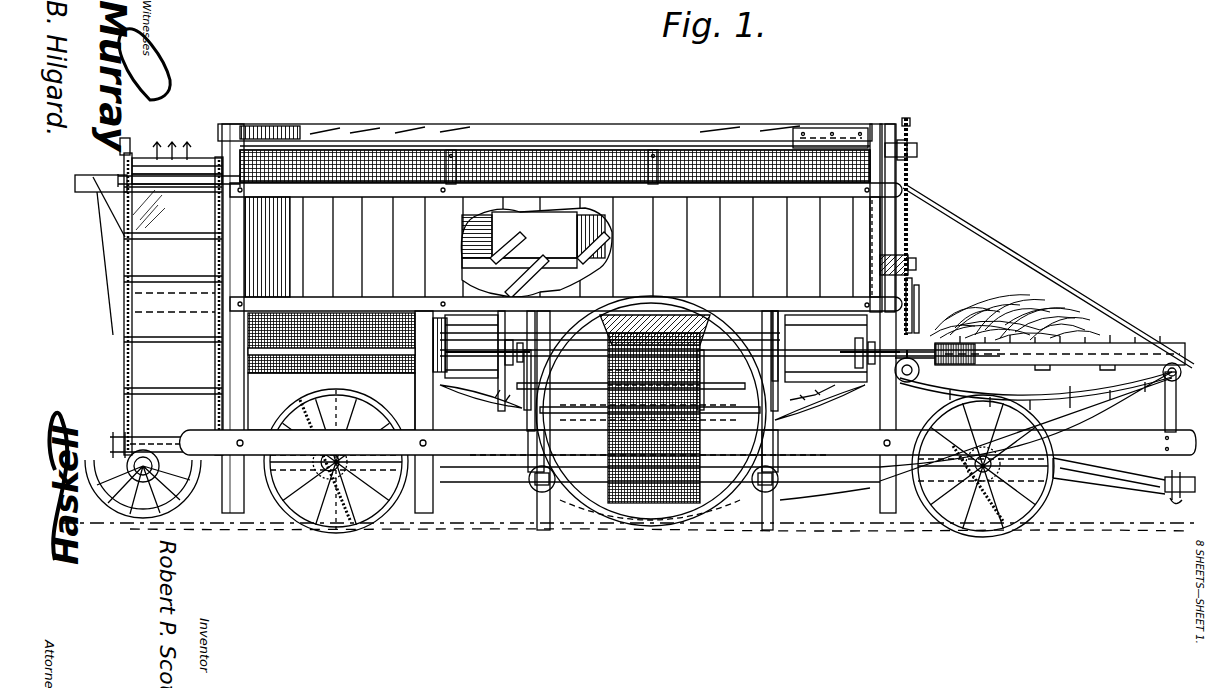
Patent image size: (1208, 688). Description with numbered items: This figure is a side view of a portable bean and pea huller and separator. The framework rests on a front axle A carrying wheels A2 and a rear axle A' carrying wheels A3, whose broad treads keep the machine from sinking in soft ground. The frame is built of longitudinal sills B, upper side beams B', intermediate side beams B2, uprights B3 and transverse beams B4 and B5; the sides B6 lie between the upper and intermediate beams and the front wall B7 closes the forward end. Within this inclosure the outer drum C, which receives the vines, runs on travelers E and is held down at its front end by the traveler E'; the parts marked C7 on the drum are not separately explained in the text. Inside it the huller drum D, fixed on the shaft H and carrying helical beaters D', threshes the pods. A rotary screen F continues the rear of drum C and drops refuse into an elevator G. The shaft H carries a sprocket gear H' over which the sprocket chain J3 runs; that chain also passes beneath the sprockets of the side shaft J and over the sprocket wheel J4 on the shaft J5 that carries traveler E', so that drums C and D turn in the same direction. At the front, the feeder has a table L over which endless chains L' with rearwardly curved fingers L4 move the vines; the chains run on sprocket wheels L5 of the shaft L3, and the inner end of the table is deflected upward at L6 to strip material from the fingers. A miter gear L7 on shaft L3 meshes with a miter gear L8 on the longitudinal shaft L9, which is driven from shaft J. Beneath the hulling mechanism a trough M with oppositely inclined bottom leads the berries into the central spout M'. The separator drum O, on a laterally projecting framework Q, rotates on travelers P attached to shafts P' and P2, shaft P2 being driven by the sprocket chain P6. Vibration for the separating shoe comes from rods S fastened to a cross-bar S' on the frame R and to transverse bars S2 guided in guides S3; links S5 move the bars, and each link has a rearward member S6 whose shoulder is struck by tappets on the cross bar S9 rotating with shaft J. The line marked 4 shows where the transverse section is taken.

The section line 4 is at (657, 604).
The transverse beams B4 is at (256, 134).
The rotary screen F is at (352, 156).
The outer drum C is at (574, 163).
The netting brackets C7 is at (455, 150).
The upper side beams B' is at (566, 201).
The sides B6 is at (713, 205).
The intermediate side beams B2 is at (350, 302).
The transverse beams B5 is at (372, 262).
The uprights B3 is at (567, 326).
The front wall B7 is at (876, 237).
The longitudinal sills B is at (331, 371).
The elevator G is at (157, 298).
The front axle A is at (551, 488).
The rear axle A' is at (336, 474).
The rear wheels A3 is at (349, 473).
The front wheels A2 is at (963, 531).
The separator framework Q is at (733, 303).
The spout M' is at (655, 437).
The frame R is at (640, 440).
The travelers E is at (720, 348).
The upper traveler E' is at (844, 205).
The cross bar S9 is at (505, 353).
The links S5 is at (519, 320).
The rearwardly extending member S6 is at (546, 320).
The cross-bar S' is at (638, 381).
The rods S is at (652, 407).
The guides S3 is at (522, 426).
The bars S2 is at (524, 456).
The travelers P is at (660, 495).
The shaft P' is at (530, 420).
The shaft P2 is at (776, 496).
The sprocket chain P6 is at (872, 490).
The separator drum O is at (606, 510).
The trough M is at (810, 407).
The shaft J is at (810, 353).
The inner drum D is at (536, 252).
The beaters D' is at (545, 234).
The sprocket gear H' is at (520, 276).
The sprocket chain J3 is at (912, 206).
The sprocket wheel J4 is at (912, 147).
The shaft J5 is at (906, 128).
The shaft H is at (915, 267).
The miter gear L8 is at (914, 300).
The longitudinal shaft L9 is at (922, 330).
The miter gear L7 is at (958, 378).
The table L is at (1060, 361).
The endless chains L' is at (1036, 391).
The fingers L4 is at (1075, 383).
The sprocket wheels L5 is at (1180, 370).
The stripper L6 is at (1174, 393).
The shaft L3 is at (905, 383).